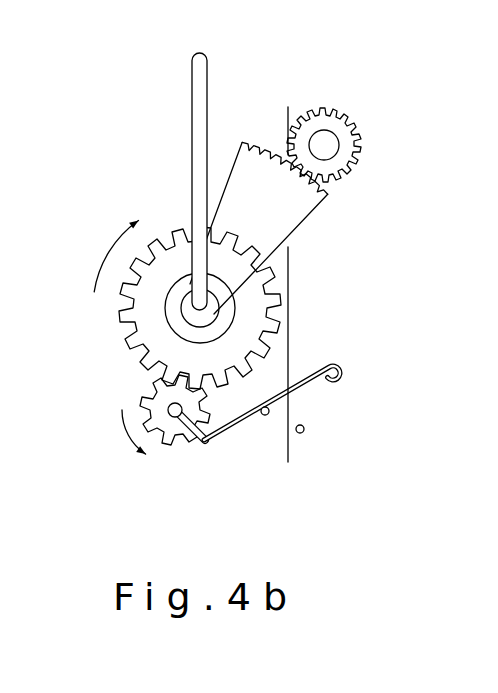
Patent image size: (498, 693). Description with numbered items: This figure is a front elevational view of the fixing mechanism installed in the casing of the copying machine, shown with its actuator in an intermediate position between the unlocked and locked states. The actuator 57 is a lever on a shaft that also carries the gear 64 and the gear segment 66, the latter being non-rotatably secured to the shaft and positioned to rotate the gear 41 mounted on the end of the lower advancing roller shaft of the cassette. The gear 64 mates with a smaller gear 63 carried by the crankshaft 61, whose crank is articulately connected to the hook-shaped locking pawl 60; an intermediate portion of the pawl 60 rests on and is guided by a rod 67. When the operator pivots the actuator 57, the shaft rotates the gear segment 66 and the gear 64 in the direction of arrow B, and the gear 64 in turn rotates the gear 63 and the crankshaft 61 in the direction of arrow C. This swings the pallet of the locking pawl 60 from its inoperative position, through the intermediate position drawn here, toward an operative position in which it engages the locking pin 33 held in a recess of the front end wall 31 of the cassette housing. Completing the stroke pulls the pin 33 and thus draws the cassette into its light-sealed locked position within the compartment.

The actuator lever 57 is at (196, 93).
The gear 41 is at (342, 130).
The gear segment 66 is at (274, 218).
The front end wall 31 is at (289, 336).
The gear 64 is at (147, 313).
The gear 63 is at (160, 393).
The crankshaft 61 is at (197, 443).
The locking pawl 60 is at (339, 371).
The rod 67 is at (263, 421).
The locking pin 33 is at (305, 432).
The arrow B is at (104, 248).
The arrow C is at (123, 427).